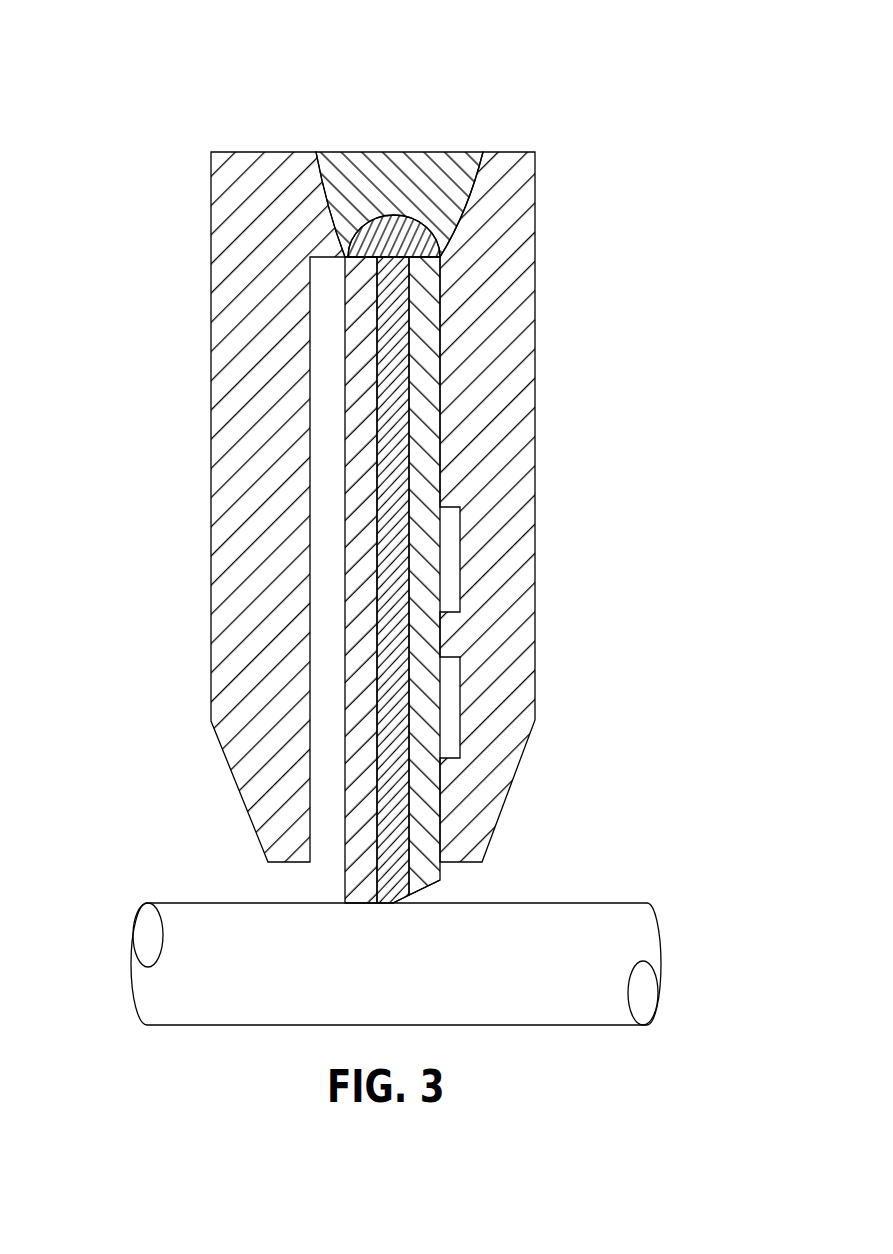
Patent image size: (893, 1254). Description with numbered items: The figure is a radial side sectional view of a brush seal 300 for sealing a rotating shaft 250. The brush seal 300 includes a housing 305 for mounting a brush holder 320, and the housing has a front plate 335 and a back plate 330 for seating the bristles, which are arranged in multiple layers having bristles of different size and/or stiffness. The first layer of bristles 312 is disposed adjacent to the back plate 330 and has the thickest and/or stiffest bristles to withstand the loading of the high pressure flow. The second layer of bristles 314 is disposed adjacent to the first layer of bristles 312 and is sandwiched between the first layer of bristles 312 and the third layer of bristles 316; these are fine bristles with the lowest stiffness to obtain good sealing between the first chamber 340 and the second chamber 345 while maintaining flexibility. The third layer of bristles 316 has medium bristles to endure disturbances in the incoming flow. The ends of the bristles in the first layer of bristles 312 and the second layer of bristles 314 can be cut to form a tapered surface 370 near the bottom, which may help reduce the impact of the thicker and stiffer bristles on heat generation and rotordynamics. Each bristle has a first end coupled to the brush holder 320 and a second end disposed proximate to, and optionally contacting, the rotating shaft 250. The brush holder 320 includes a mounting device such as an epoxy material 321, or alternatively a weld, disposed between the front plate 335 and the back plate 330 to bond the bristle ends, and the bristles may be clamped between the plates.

The brush seal 300 is at (414, 38).
The housing 305 is at (550, 223).
The brush holder 320 is at (378, 162).
The epoxy material 321 is at (413, 218).
The front plate 335 is at (222, 318).
The back plate 330 is at (617, 694).
The third layer of bristles 316 is at (550, 363).
The second layer of bristles 314 is at (583, 427).
The first layer of bristles 312 is at (620, 477).
The tapered surface 370 is at (537, 860).
The rotating shaft 250 is at (396, 964).
The first chamber 340 is at (58, 570).
The second chamber 345 is at (749, 570).